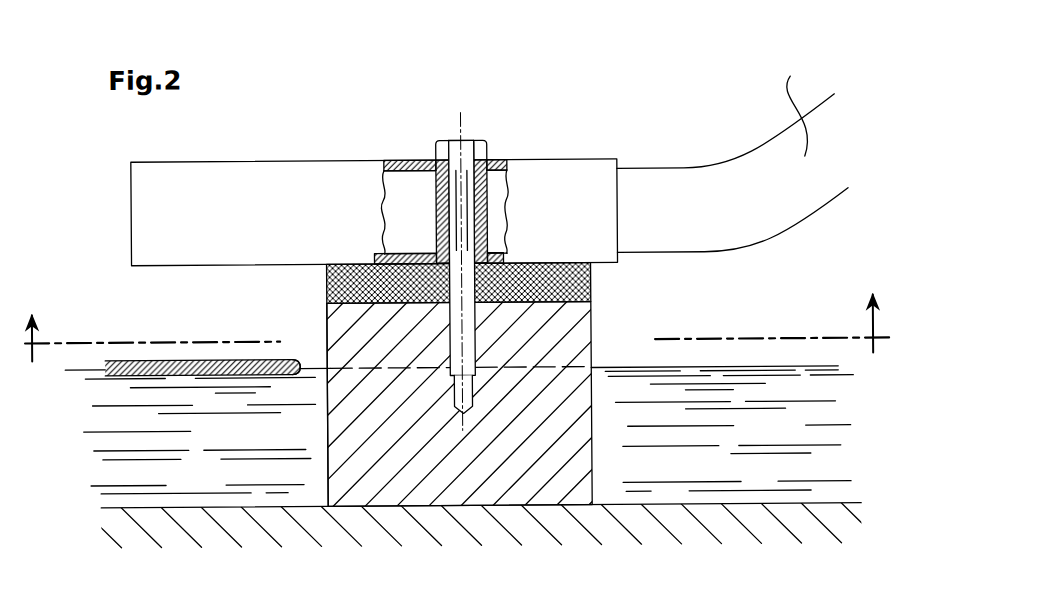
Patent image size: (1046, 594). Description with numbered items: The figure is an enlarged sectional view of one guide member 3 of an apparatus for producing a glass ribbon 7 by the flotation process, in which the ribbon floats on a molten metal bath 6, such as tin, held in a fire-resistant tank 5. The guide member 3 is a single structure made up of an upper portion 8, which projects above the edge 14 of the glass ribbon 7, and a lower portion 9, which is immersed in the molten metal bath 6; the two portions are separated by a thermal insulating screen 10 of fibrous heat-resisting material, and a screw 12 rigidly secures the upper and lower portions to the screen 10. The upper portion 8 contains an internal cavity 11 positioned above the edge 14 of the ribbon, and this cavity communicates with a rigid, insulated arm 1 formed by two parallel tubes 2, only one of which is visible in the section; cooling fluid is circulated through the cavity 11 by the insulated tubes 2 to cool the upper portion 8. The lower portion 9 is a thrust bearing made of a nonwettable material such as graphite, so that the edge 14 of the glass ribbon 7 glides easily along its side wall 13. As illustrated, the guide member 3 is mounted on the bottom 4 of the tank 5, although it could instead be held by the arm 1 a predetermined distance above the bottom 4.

The rigid insulated arm 1 is at (733, 190).
The insulated tube 2 is at (796, 105).
The guide member 3 is at (729, 305).
The bottom of tank 4 is at (631, 501).
The tank 5 is at (656, 527).
The molten metal bath 6 is at (214, 470).
The glass ribbon 7 is at (112, 354).
The upper portion 8 is at (238, 157).
The lower portion 9 is at (594, 326).
The thermal insulating screen 10 is at (325, 284).
The internal cavity 11 is at (413, 187).
The screw 12 is at (483, 137).
The side wall 13 is at (325, 423).
The edge of glass ribbon 14 is at (300, 354).